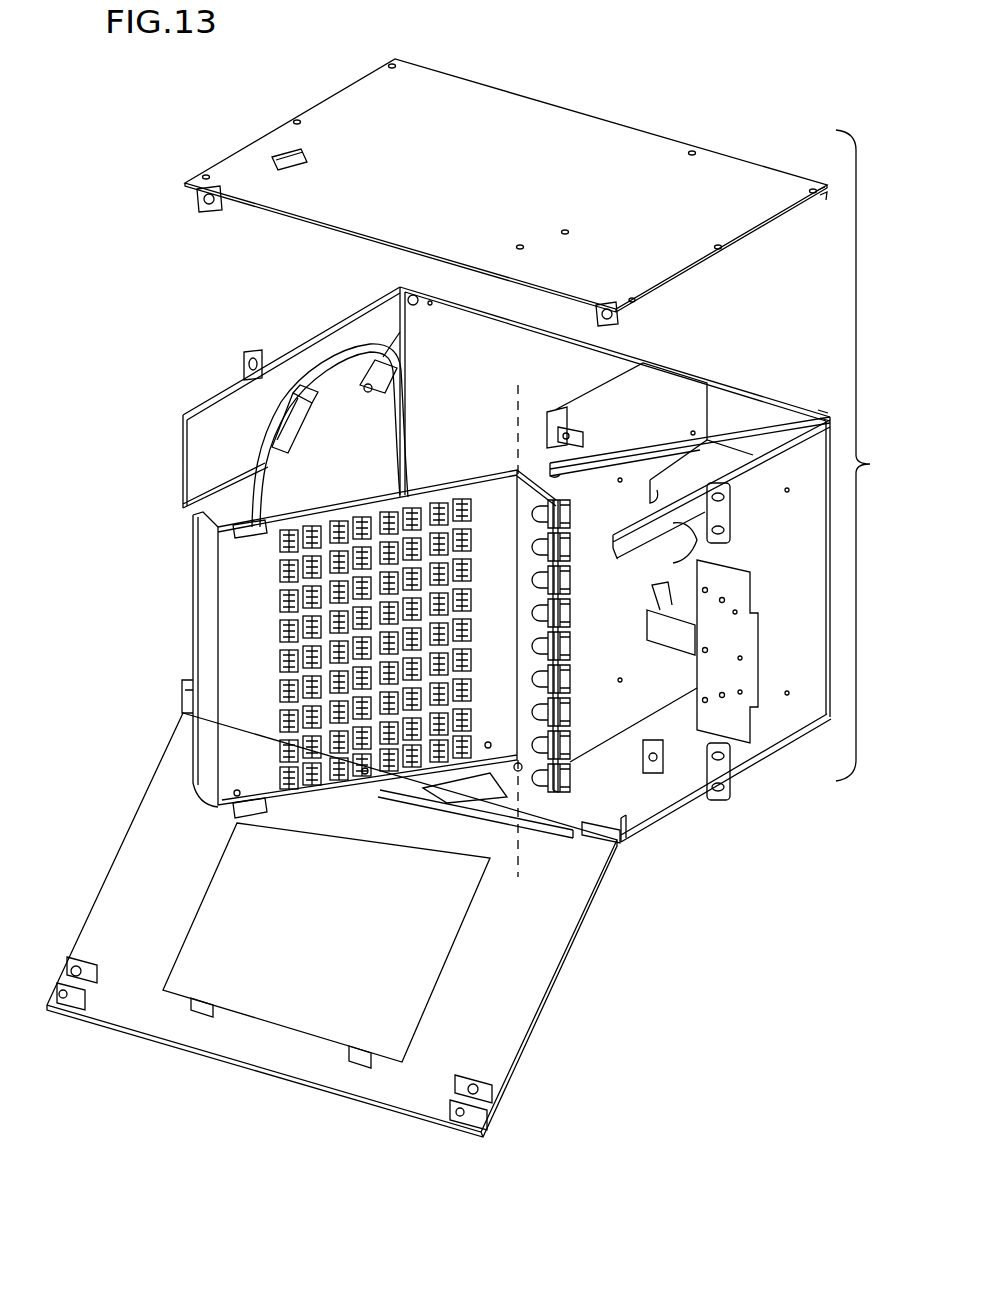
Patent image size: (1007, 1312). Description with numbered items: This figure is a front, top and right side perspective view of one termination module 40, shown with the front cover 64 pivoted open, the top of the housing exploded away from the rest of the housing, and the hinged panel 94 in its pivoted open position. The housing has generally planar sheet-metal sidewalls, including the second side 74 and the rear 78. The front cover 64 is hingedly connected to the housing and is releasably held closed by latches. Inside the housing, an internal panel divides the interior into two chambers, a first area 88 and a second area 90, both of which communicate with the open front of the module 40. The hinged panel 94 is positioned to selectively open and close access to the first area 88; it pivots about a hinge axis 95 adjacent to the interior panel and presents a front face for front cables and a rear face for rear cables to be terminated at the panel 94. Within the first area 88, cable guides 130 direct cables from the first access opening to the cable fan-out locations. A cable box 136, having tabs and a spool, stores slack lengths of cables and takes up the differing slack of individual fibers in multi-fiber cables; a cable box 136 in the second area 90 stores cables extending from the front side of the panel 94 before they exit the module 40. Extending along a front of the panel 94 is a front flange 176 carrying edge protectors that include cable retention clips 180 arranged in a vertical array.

The termination module 40 is at (875, 455).
The front cover 64 is at (520, 990).
The second side 74 is at (483, 165).
The rear 78 is at (535, 375).
The first area 88 is at (497, 435).
The second area 90 is at (635, 598).
The hinged panel 94 is at (273, 658).
The hinge axis 95 is at (545, 863).
The cable guides 130 is at (397, 362).
The cable box 136 is at (747, 440).
The front flange 176 is at (557, 772).
The cable retention clips 180 is at (570, 507).